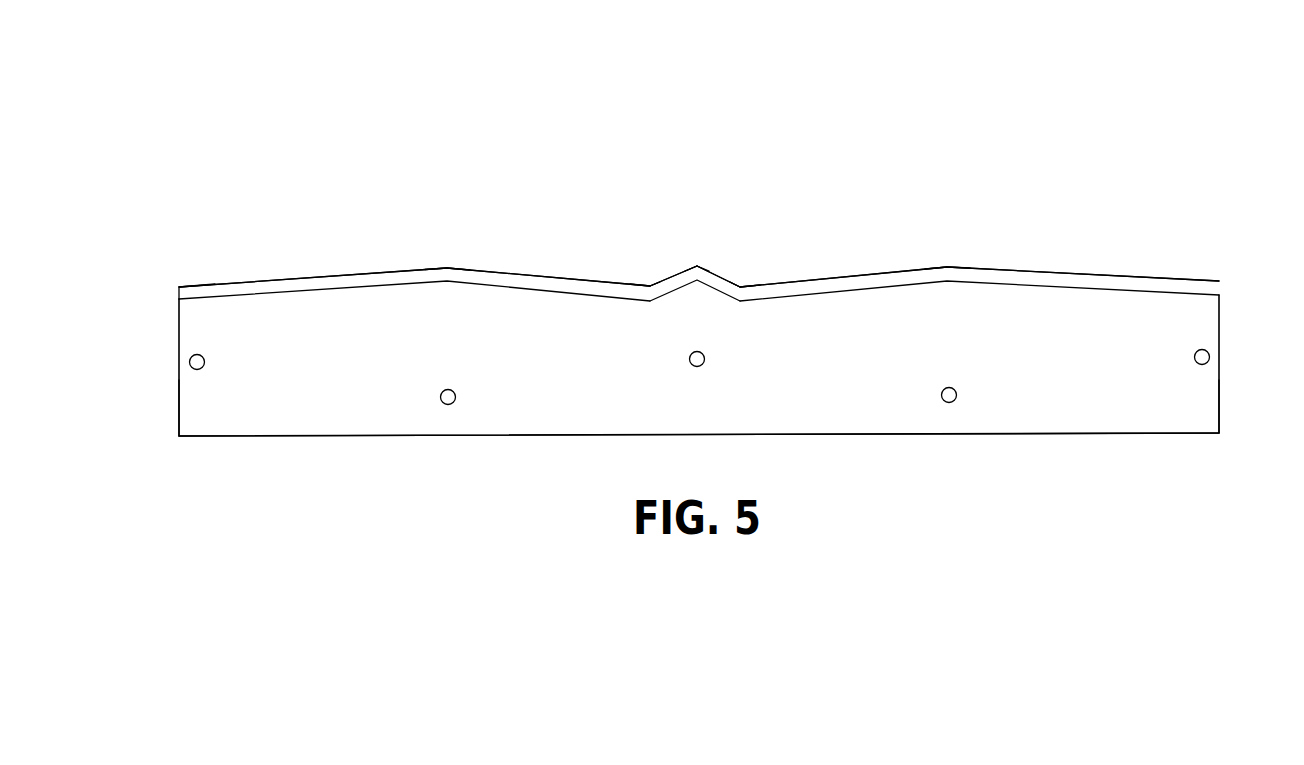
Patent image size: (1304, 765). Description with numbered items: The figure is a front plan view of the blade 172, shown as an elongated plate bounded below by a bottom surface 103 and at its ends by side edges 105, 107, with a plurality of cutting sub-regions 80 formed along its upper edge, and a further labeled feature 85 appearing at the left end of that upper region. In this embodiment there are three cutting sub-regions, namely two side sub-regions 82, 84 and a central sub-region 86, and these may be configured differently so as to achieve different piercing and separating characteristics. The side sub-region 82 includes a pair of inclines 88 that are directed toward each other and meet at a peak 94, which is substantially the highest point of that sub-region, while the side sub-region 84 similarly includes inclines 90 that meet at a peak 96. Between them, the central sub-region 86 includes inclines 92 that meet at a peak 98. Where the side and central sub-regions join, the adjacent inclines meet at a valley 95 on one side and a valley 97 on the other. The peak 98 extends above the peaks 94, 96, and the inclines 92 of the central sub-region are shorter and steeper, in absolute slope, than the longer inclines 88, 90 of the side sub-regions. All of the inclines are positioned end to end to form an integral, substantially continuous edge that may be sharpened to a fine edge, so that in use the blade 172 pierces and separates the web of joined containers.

The cutting sub-regions 80 is at (758, 257).
The side sub-region 82 is at (389, 247).
The side sub-region 84 is at (1037, 228).
The left end edge 85 is at (194, 290).
The central sub-region 86 is at (692, 214).
The incline 88 is at (288, 268).
The incline 90 is at (890, 259).
The incline 92 is at (666, 263).
The peak 94 is at (447, 260).
The valley 95 is at (645, 280).
The peak 96 is at (947, 259).
The valley 97 is at (756, 276).
The peak 98 is at (700, 264).
The bottom surface 103 is at (280, 438).
The side edge 105 is at (179, 413).
The side edge 107 is at (1219, 407).
The blade 172 is at (751, 145).